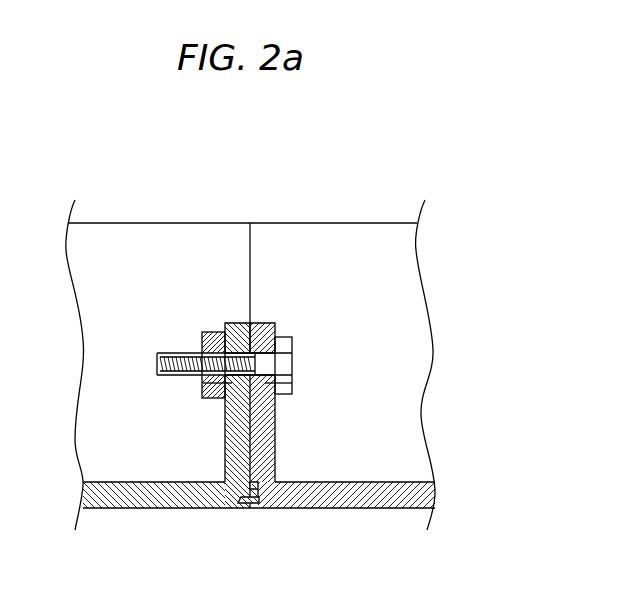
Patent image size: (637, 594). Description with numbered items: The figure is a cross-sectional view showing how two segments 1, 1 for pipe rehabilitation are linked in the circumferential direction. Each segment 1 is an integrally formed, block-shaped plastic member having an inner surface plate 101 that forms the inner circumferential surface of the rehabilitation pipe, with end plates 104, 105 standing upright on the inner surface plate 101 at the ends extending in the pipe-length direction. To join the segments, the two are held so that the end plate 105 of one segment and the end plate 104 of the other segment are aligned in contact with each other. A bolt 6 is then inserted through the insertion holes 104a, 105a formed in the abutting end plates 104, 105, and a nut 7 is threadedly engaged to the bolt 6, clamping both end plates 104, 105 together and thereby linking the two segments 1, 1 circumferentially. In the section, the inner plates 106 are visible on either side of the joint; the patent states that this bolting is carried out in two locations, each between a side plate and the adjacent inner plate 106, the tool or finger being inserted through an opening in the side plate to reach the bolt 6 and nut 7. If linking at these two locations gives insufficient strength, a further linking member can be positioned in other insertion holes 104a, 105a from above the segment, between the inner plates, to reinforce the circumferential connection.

The segment 1 is at (172, 186).
The bolt 6 is at (292, 350).
The nut 7 is at (202, 335).
The inner surface plate 101 is at (118, 500).
The end plate 104 is at (268, 323).
The insertion hole 104a is at (293, 382).
The end plate 105 is at (233, 323).
The insertion hole 105a is at (205, 383).
The inner plate 106 is at (123, 223).